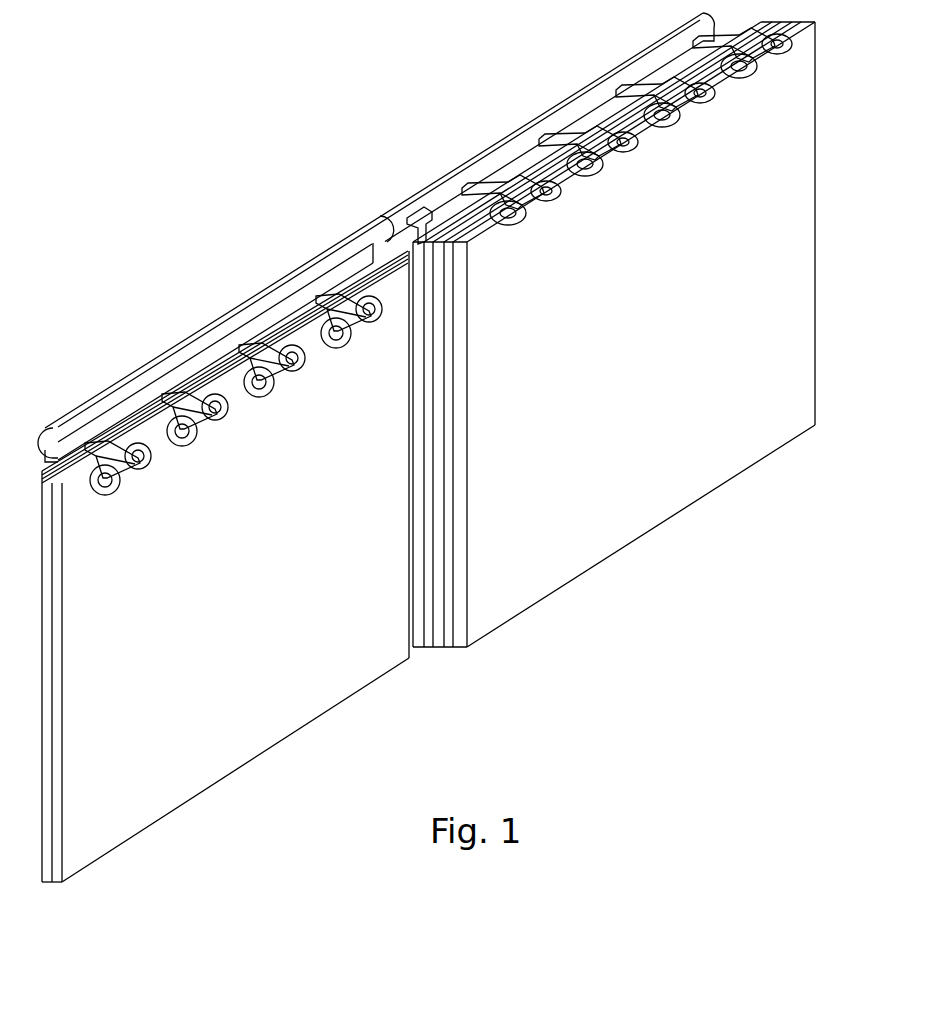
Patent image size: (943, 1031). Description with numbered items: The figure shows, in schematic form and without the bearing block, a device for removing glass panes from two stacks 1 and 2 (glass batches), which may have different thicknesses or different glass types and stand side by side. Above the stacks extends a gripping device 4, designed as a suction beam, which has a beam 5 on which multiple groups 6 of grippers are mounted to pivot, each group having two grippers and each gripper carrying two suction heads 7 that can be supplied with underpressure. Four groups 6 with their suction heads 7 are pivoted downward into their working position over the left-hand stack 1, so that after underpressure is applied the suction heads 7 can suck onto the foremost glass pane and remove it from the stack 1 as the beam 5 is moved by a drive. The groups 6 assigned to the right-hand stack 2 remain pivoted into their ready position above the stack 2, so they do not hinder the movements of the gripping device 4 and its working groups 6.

The stack 1 is at (147, 762).
The stack 2 is at (633, 462).
The gripping device 4 is at (430, 88).
The beam 5 is at (302, 272).
The group 6 is at (207, 457).
The suction head 7 is at (606, 173).